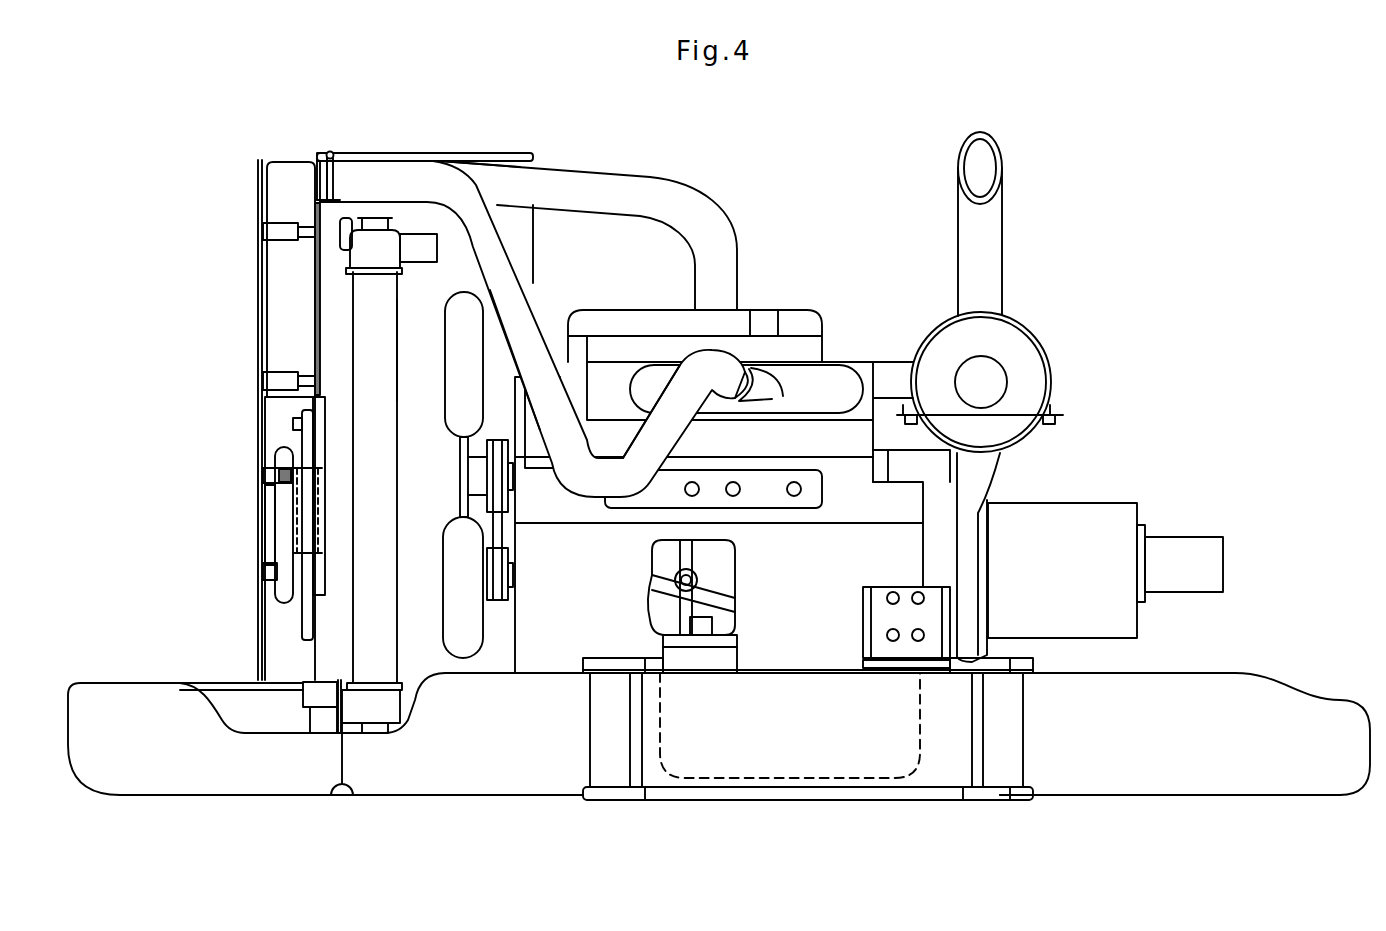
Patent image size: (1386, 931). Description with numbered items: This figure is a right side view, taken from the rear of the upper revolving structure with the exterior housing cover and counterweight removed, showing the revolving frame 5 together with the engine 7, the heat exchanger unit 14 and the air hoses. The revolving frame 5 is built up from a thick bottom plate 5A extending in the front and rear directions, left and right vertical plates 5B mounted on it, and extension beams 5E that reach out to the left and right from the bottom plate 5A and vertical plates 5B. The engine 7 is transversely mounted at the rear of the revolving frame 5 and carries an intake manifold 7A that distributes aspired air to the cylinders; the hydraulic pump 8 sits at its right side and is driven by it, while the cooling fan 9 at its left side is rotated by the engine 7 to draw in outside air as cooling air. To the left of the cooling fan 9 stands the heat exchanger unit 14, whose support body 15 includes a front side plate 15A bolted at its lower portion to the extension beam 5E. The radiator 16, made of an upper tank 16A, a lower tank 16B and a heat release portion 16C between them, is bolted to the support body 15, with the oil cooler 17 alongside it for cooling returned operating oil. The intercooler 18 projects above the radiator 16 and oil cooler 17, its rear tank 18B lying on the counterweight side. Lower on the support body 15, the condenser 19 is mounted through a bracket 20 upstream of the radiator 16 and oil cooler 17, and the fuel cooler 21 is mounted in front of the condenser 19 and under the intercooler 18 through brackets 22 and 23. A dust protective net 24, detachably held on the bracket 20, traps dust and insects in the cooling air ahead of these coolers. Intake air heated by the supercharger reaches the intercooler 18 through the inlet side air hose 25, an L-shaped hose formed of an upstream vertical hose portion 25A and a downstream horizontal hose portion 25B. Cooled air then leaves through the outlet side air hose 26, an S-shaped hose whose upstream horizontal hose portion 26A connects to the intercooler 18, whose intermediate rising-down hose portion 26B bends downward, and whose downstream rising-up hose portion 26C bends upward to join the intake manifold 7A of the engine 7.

The revolving frame 5 is at (600, 806).
The bottom plate 5A is at (802, 795).
The vertical plate 5B is at (637, 727).
The extension beam 5E is at (262, 775).
The engine 7 is at (758, 318).
The intake manifold 7A is at (793, 377).
The hydraulic pump 8 is at (1100, 527).
The cooling fan 9 is at (465, 632).
The heat exchanger unit 14 is at (325, 140).
The support body 15 is at (455, 153).
The front side plate 15A is at (413, 153).
The radiator 16 is at (360, 355).
The upper tank 16A is at (362, 257).
The lower tank 16B is at (374, 710).
The heat release portion 16C is at (365, 330).
The oil cooler 17 is at (358, 225).
The intercooler 18 is at (283, 207).
The rear tank 18B is at (288, 160).
The condenser 19 is at (305, 437).
The bracket 20 is at (322, 580).
The fuel cooler 21 is at (283, 503).
The bracket 22 is at (270, 572).
The bracket 23 is at (290, 482).
The dust protective net 24 is at (262, 258).
The inlet side air hose 25 is at (650, 190).
The vertical hose portion 25A is at (763, 320).
The horizontal hose portion 25B is at (500, 178).
The outlet side air hose 26 is at (500, 243).
The horizontal hose portion 26A is at (375, 178).
The rising-down hose portion 26B is at (525, 325).
The rising-up hose portion 26C is at (667, 415).